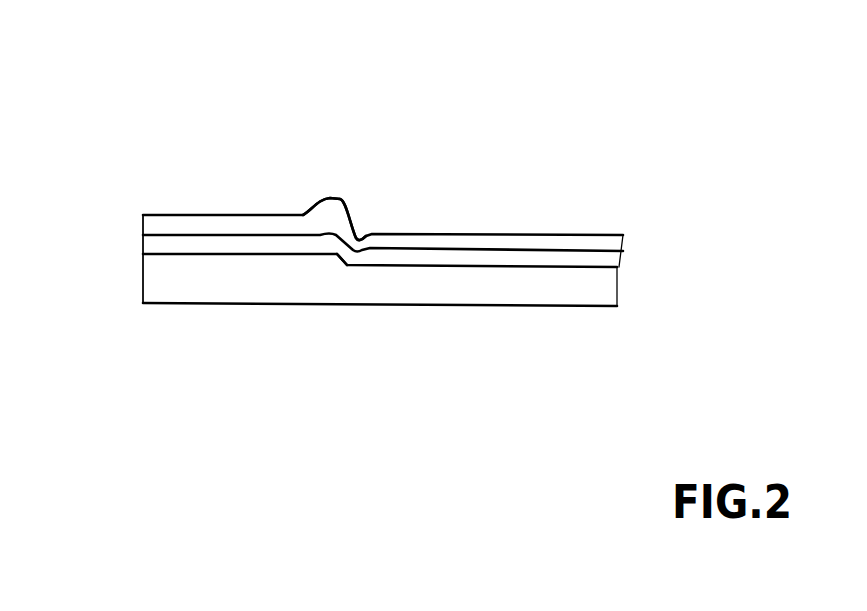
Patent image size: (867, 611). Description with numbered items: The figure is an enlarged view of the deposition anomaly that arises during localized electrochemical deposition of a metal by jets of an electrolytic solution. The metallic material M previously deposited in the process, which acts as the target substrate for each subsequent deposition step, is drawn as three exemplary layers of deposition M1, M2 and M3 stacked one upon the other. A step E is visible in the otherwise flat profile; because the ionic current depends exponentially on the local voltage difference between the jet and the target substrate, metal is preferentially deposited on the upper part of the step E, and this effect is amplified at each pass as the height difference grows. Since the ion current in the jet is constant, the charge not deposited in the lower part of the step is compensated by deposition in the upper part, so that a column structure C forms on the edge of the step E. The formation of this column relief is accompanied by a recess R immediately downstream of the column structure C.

The metallic material M is at (118, 271).
The first deposition layer M1 is at (598, 290).
The second deposition layer M2 is at (600, 257).
The third deposition layer M3 is at (597, 243).
The column structure C is at (303, 190).
The recess R is at (356, 218).
The step E is at (345, 257).